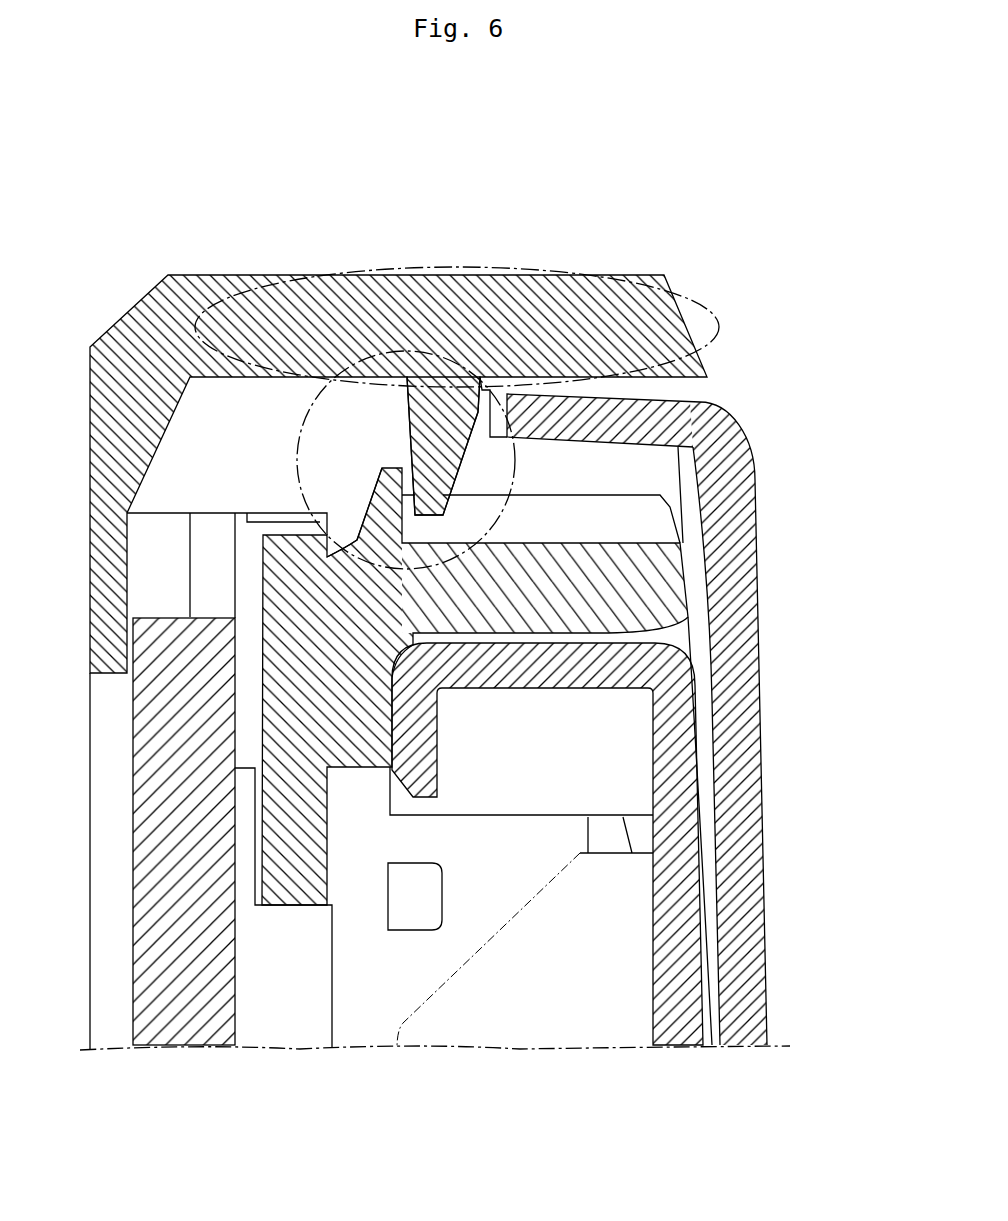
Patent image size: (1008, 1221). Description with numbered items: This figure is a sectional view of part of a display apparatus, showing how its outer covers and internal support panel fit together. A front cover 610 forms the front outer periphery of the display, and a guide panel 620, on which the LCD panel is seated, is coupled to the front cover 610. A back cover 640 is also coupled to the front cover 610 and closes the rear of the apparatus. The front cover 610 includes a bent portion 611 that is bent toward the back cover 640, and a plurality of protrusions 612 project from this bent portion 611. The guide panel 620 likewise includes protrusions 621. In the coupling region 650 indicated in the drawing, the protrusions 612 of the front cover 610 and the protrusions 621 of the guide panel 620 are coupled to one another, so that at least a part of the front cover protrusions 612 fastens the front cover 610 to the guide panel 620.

The front cover 610 is at (117, 320).
The bent portion 611 is at (507, 268).
The protrusions 612 is at (407, 430).
The guide panel 620 is at (627, 590).
The protrusions 621 is at (373, 503).
The back cover 640 is at (763, 858).
The coupling region 650 is at (508, 447).